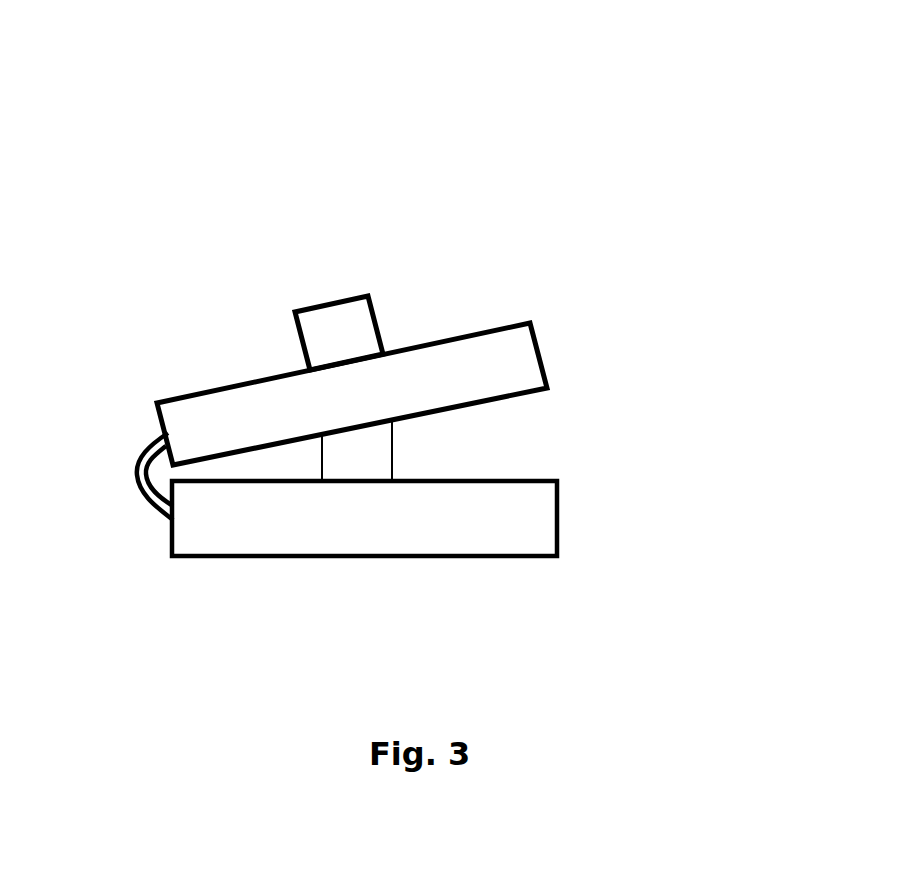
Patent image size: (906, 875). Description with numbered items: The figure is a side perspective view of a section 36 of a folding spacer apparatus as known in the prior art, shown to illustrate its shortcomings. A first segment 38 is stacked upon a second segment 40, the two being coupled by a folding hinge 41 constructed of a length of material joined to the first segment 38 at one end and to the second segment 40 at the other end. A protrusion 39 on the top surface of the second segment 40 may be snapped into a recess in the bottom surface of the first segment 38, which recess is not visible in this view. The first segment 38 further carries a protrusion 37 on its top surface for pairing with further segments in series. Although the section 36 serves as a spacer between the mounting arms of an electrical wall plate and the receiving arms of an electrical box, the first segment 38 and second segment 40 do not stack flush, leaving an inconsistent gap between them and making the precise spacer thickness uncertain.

The section 36 is at (335, 52).
The protrusion 37 is at (353, 320).
The first segment 38 is at (483, 360).
The protrusion 39 is at (357, 447).
The second segment 40 is at (520, 520).
The folding hinge 41 is at (133, 473).